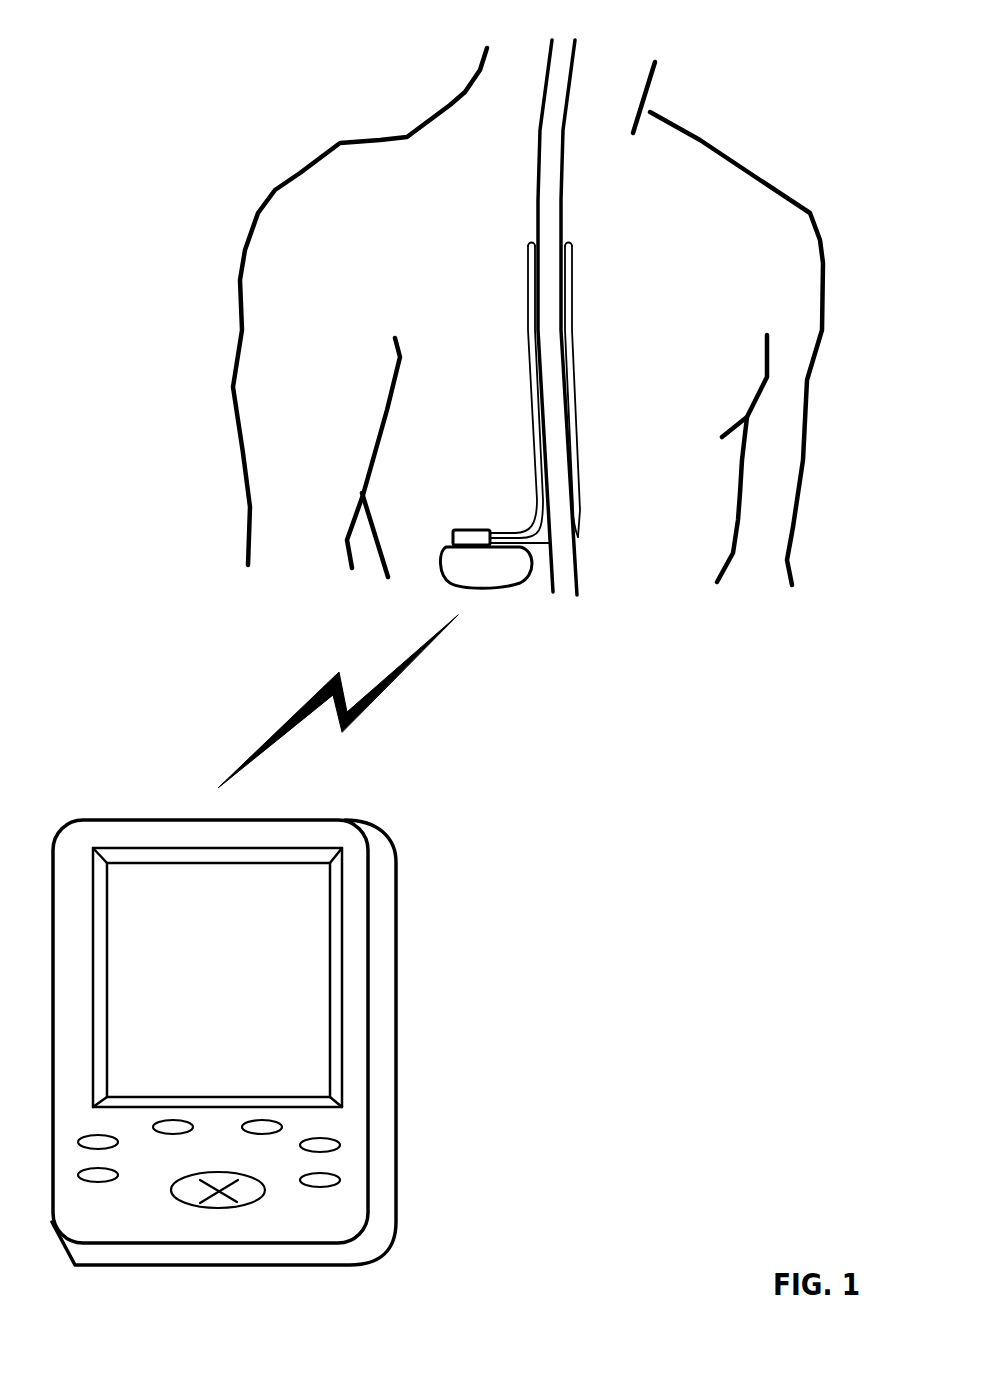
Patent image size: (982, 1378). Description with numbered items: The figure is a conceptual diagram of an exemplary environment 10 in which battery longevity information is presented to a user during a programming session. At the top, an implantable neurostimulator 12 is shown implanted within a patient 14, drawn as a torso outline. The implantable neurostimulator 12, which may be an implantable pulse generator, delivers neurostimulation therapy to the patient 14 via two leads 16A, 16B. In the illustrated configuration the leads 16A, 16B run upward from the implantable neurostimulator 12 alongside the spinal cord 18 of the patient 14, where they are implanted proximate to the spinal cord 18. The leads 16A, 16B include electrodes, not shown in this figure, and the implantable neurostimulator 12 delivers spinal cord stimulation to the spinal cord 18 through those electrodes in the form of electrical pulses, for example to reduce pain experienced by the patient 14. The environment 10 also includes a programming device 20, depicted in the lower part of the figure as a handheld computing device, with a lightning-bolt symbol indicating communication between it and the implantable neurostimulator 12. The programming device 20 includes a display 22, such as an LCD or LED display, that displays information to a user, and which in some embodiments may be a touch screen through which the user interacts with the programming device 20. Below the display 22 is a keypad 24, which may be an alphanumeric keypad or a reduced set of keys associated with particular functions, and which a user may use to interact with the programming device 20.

The environment 10 is at (142, 136).
The implantable neurostimulator 12 is at (441, 530).
The patient 14 is at (748, 144).
The lead 16A is at (518, 366).
The lead 16B is at (595, 360).
The spinal cord 18 is at (586, 192).
The programming device 20 is at (127, 803).
The display 22 is at (297, 1042).
The keypad 24 is at (305, 1200).